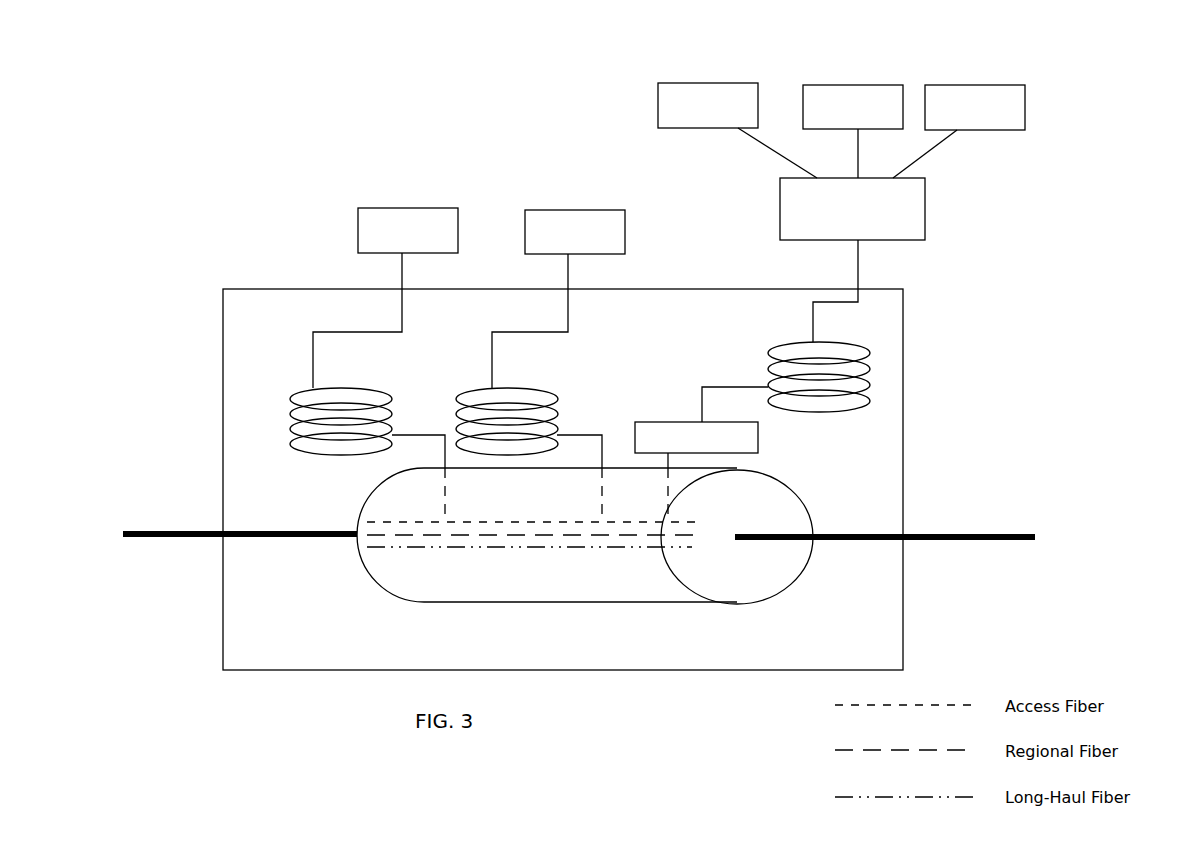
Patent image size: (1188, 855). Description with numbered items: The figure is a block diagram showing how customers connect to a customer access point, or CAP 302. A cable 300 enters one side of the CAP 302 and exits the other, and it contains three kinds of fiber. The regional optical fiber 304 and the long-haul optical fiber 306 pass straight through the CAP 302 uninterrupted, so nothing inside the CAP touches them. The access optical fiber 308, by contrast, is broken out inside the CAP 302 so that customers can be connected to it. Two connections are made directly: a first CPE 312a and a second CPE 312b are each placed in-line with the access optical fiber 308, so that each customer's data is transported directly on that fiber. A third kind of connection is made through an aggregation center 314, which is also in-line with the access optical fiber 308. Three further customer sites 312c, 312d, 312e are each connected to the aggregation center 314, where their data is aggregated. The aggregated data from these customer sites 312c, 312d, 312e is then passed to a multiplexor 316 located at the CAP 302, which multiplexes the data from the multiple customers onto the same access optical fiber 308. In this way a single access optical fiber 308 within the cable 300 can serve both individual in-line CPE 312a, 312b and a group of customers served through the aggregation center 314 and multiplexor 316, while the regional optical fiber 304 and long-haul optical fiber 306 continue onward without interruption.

The cable 300 is at (802, 500).
The CAP 302 is at (905, 358).
The regional optical fiber 304 is at (413, 535).
The long-haul optical fiber 306 is at (623, 547).
The access optical fiber 308 is at (511, 522).
The CPE 312a is at (402, 208).
The CPE 312b is at (568, 210).
The customer site 312c is at (703, 83).
The customer site 312d is at (847, 85).
The customer site 312e is at (970, 85).
The aggregation center 314 is at (927, 198).
The multiplexor 316 is at (763, 437).